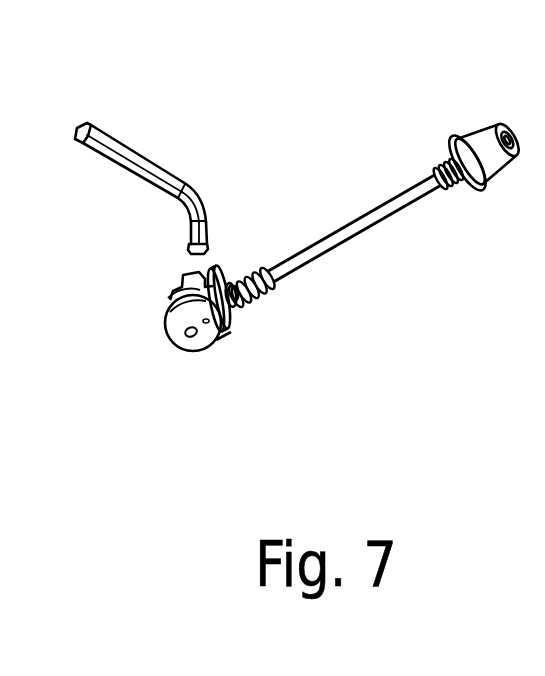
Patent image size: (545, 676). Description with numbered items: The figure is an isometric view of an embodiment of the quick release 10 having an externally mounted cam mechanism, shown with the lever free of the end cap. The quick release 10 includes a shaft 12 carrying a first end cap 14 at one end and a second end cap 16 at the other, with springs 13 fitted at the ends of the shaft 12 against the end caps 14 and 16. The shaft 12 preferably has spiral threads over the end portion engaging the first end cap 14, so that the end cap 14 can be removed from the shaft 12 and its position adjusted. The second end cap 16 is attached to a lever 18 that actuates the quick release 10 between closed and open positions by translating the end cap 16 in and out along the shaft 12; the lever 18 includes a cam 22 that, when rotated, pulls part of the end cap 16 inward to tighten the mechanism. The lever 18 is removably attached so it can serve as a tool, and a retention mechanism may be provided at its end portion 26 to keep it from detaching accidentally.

The quick release 10 is at (341, 103).
The shaft 12 is at (343, 238).
The springs 13 is at (447, 196).
The first end cap 14 is at (485, 132).
The second end cap 16 is at (222, 328).
The lever 18 is at (172, 171).
The cam 22 is at (198, 350).
The end portion 26 is at (208, 221).